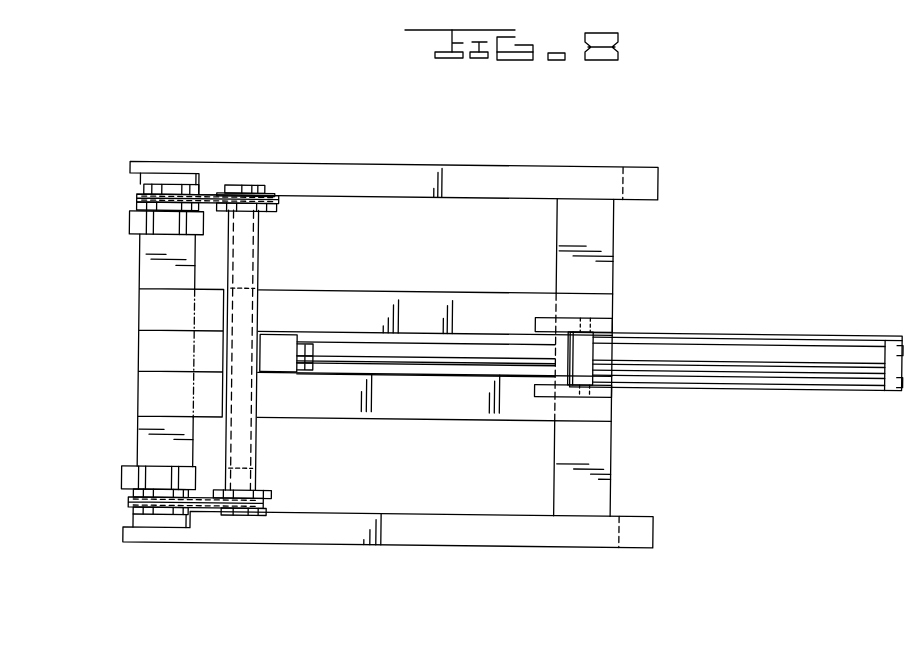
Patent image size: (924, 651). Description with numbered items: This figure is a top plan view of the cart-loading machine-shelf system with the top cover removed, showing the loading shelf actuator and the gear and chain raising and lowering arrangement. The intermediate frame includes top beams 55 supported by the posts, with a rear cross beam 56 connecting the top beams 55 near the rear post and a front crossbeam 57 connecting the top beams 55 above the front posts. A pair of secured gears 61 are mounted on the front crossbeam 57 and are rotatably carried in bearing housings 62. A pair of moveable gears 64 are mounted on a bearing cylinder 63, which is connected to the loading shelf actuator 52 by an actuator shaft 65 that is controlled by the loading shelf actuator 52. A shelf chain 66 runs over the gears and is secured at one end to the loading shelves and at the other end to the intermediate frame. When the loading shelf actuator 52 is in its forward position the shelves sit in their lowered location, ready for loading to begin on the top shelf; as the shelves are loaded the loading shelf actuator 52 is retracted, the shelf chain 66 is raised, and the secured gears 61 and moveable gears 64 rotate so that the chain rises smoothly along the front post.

The loading shelf actuator 52 is at (762, 352).
The top beams 55 is at (523, 532).
The rear cross beam 56 is at (598, 497).
The front crossbeam 57 is at (143, 448).
The secured gears 61 is at (140, 195).
The bearing housings 62 is at (163, 228).
The bearing cylinder 63 is at (262, 272).
The moveable gears 64 is at (273, 203).
The actuator shaft 65 is at (485, 353).
The shelf chain 66 is at (207, 196).